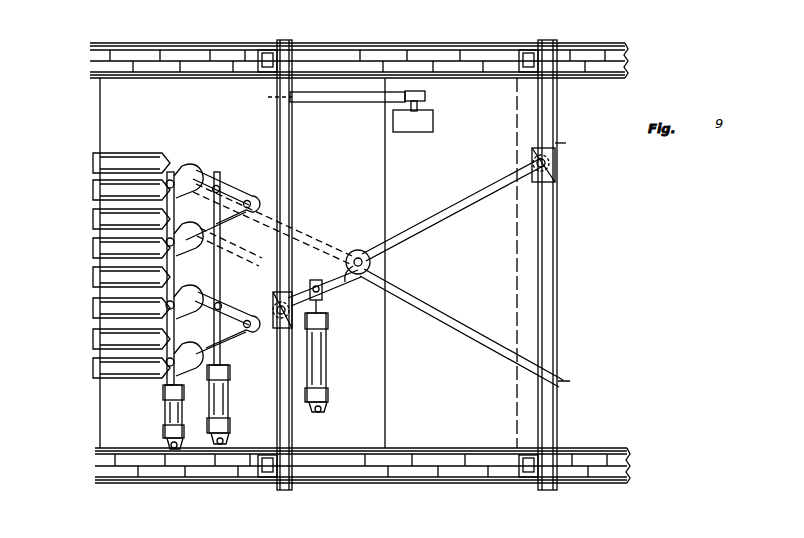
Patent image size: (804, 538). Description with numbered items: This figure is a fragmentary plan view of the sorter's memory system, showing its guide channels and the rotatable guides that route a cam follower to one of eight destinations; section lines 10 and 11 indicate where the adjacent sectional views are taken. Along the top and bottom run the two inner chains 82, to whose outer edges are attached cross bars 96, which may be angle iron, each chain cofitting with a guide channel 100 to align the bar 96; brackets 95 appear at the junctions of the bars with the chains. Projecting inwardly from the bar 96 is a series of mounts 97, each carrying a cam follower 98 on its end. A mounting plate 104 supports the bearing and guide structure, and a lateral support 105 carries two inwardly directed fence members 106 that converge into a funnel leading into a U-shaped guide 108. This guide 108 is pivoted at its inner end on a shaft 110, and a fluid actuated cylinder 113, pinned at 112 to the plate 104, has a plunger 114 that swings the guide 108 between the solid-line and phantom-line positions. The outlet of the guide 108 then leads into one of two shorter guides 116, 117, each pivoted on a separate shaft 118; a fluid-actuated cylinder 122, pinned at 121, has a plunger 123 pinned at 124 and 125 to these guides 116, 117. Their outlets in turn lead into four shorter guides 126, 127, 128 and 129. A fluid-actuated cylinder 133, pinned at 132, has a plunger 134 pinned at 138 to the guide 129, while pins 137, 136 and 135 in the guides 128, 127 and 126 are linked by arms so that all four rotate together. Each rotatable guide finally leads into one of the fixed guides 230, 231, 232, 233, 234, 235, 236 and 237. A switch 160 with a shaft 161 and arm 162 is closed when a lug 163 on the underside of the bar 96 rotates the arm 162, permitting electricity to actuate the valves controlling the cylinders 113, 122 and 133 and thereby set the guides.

The section line 10- 10 is at (60, 366).
The section line 11- 11 is at (158, 500).
The inner chain 82 is at (332, 48).
The beam bracket 95 is at (251, 52).
The cross bar 96 is at (282, 137).
The mount 97 is at (545, 178).
The cam follower 98 is at (556, 160).
The guide channel 100 is at (592, 72).
The mounting plate 104 is at (497, 448).
The lateral support 105 is at (557, 296).
The fence member 106 is at (459, 205).
The guide 108 is at (345, 285).
The shaft 110 is at (371, 264).
The pin 112 is at (322, 410).
The fluid actuated cylinder 113 is at (318, 371).
The plunger 114 is at (328, 312).
The shorter guide 116 is at (222, 188).
The shorter guide 117 is at (224, 305).
The shaft 118 is at (248, 198).
The pin 121 is at (224, 443).
The fluid-actuated cylinder 122 is at (223, 396).
The plunger 123 is at (219, 262).
The pin 124 is at (222, 180).
The pin 125 is at (232, 296).
The shorter guide 126 is at (185, 170).
The shorter guide 127 is at (182, 231).
The shorter guide 128 is at (182, 291).
The shorter guide 129 is at (182, 351).
The pin 132 is at (177, 446).
The fluid-actuated cylinder 133 is at (168, 418).
The plunger 134 is at (168, 382).
The pin 135 is at (166, 186).
The pin 136 is at (166, 243).
The pin 137 is at (166, 306).
The pin 138 is at (166, 364).
The switch 160 is at (428, 123).
The shaft 161 is at (416, 106).
The arm 162 is at (340, 102).
The lug 163 is at (255, 97).
The fixed guide 230 is at (93, 163).
The fixed guide 231 is at (93, 190).
The fixed guide 232 is at (93, 219).
The fixed guide 233 is at (93, 248).
The fixed guide 234 is at (93, 277).
The fixed guide 235 is at (93, 308).
The fixed guide 236 is at (93, 339).
The fixed guide 237 is at (93, 368).